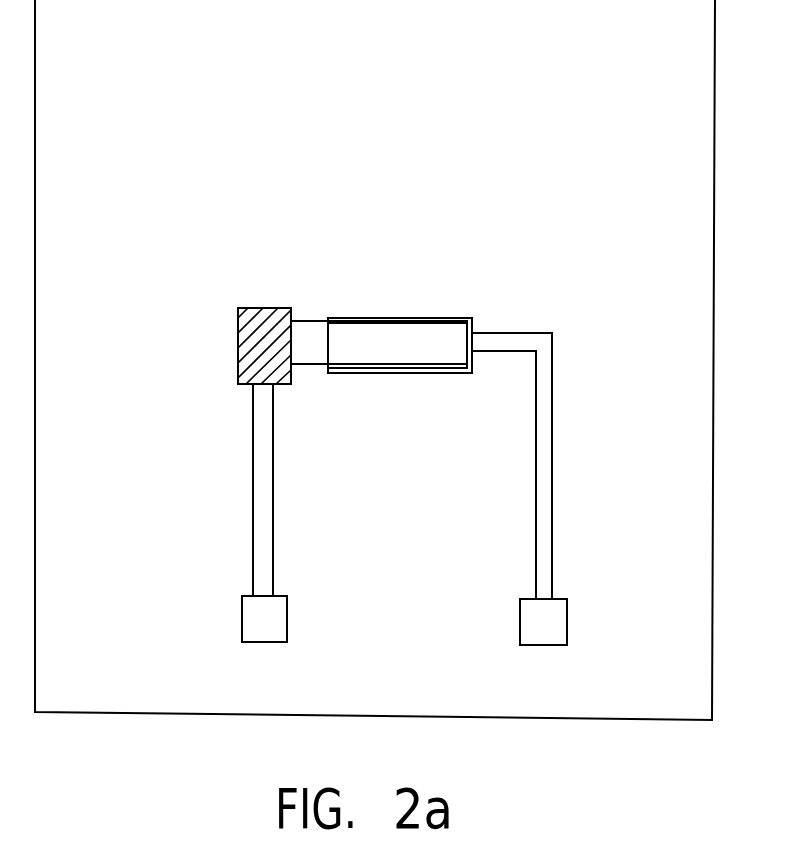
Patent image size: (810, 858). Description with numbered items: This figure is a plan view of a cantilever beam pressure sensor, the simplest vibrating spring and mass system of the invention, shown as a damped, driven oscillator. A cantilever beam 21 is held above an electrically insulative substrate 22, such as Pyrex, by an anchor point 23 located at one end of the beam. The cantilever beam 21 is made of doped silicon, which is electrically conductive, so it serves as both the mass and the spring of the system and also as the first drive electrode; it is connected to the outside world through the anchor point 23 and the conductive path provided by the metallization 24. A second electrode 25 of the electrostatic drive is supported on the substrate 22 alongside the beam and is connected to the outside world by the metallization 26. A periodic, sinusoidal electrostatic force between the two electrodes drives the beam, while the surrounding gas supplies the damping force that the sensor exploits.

The cantilever beam 21 is at (318, 345).
The electrically insulative substrate 22 is at (683, 329).
The anchor point 23 is at (247, 345).
The metallization 24 is at (254, 508).
The second electrode 25 is at (427, 318).
The metallization 26 is at (553, 458).